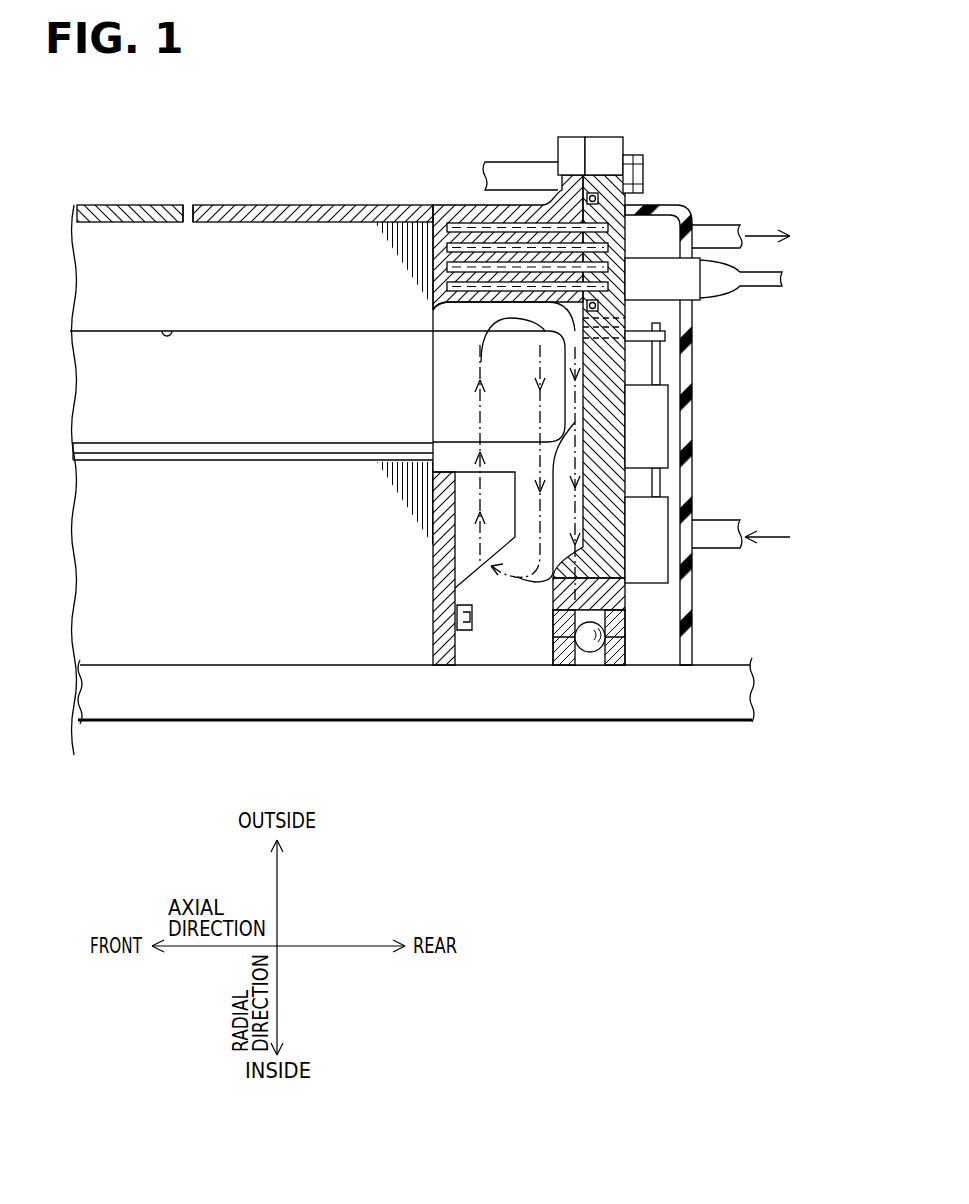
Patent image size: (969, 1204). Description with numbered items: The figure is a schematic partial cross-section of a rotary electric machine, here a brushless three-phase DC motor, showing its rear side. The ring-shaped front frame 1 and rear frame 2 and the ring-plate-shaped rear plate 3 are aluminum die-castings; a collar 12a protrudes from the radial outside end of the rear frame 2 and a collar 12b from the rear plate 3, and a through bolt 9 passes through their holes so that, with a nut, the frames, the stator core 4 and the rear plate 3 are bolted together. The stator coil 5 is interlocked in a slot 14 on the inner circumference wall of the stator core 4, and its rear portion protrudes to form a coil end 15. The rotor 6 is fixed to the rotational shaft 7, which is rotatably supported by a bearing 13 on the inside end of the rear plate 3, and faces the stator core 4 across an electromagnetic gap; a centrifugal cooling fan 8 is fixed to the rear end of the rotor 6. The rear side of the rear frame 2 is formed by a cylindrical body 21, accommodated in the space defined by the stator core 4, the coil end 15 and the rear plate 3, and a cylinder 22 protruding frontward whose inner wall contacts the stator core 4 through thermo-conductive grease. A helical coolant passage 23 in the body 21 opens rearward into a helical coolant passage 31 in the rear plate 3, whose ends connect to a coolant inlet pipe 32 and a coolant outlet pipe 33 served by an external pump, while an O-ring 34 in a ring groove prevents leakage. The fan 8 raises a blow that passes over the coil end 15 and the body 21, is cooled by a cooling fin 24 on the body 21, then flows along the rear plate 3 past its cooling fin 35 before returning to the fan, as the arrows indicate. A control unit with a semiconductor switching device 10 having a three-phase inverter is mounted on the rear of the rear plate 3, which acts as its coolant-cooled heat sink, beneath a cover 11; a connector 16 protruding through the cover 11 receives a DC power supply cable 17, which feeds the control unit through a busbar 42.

The front frame 1 is at (112, 204).
The rear frame 2 is at (311, 204).
The rear plate 3 is at (625, 598).
The stator core 4 is at (247, 257).
The stator coil 5 is at (305, 325).
The rotor 6 is at (323, 630).
The rotational shaft 7 is at (425, 707).
The cooling fan 8 is at (480, 560).
The through bolt 9 is at (528, 170).
The semiconductor switching device 10 is at (660, 428).
The cover 11 is at (692, 357).
The collar 12a is at (572, 142).
The collar 12b is at (606, 140).
The bearing 13 is at (583, 666).
The slot 14 is at (170, 331).
The coil end 15 is at (498, 401).
The connector 16 is at (660, 262).
The DC power supply cable 17 is at (718, 290).
The body 21 is at (440, 253).
The cylinder 22 is at (356, 213).
The coolant passage 23 is at (458, 226).
The cooling fin 24 is at (508, 303).
The coolant passage 31 is at (612, 212).
The coolant inlet pipe 32 is at (714, 552).
The coolant outlet pipe 33 is at (718, 235).
The O-ring 34 is at (641, 157).
The cooling fin 35 is at (537, 584).
The busbar 42 is at (660, 370).